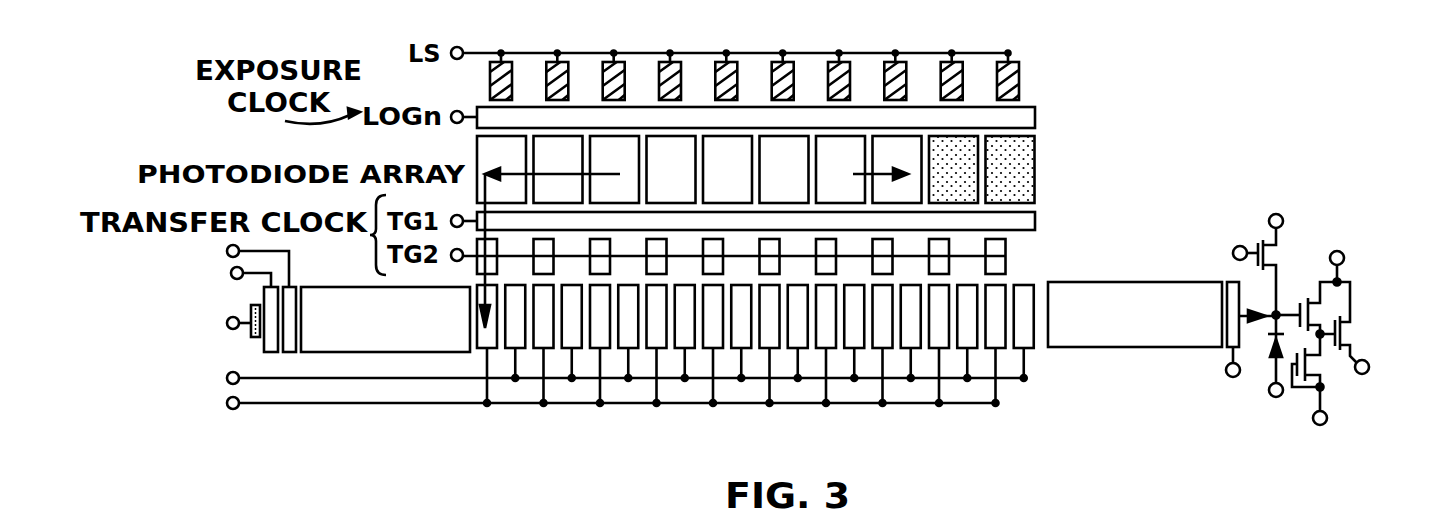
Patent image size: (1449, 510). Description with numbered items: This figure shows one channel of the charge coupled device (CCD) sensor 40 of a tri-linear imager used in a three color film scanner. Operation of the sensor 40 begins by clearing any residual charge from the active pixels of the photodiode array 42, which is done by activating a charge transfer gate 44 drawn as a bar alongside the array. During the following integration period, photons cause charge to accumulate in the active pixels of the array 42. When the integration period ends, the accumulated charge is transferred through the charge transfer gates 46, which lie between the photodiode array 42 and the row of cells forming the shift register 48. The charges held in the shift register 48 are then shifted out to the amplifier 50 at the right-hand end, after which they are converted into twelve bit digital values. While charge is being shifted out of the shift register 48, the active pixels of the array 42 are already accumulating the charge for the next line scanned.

The charge coupled device (CCD) sensor 40 is at (480, 425).
The photodiode array 42 is at (475, 148).
The charge transfer gate 44 is at (1035, 113).
The charge transfer gates 46 is at (1040, 203).
The shift register 48 is at (863, 358).
The amplifier 50 is at (1332, 192).